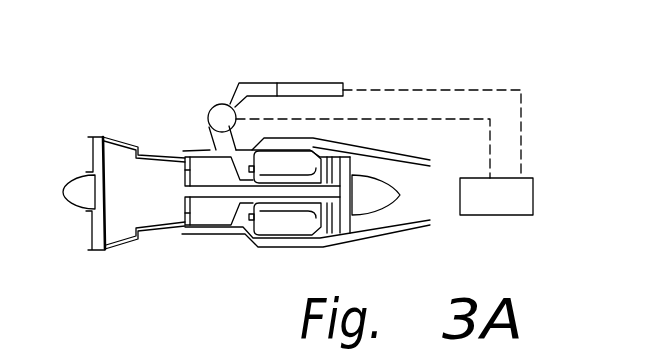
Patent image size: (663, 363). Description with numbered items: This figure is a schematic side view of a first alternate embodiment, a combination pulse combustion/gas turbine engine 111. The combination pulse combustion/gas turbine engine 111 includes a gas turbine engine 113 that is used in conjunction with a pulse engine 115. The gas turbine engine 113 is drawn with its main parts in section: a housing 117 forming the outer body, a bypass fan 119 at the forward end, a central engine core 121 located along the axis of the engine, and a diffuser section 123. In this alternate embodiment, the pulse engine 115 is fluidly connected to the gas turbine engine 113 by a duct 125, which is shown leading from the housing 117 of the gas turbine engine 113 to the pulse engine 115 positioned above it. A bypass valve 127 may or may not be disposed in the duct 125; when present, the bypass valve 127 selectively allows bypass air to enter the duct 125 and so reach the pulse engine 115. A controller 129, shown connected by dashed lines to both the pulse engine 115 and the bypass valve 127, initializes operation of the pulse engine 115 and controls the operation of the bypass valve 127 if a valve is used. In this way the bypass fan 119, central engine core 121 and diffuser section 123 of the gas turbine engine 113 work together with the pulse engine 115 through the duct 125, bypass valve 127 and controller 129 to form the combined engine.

The combination pulse combustion/gas turbine engine 111 is at (181, 56).
The gas turbine engine 113 is at (147, 145).
The pulse engine 115 is at (337, 62).
The housing 117 is at (150, 242).
The bypass fan 119 is at (117, 243).
The central engine core 121 is at (287, 243).
The diffuser section 123 is at (215, 236).
The duct 125 is at (265, 82).
The bypass valve 127 is at (210, 110).
The controller 129 is at (533, 197).